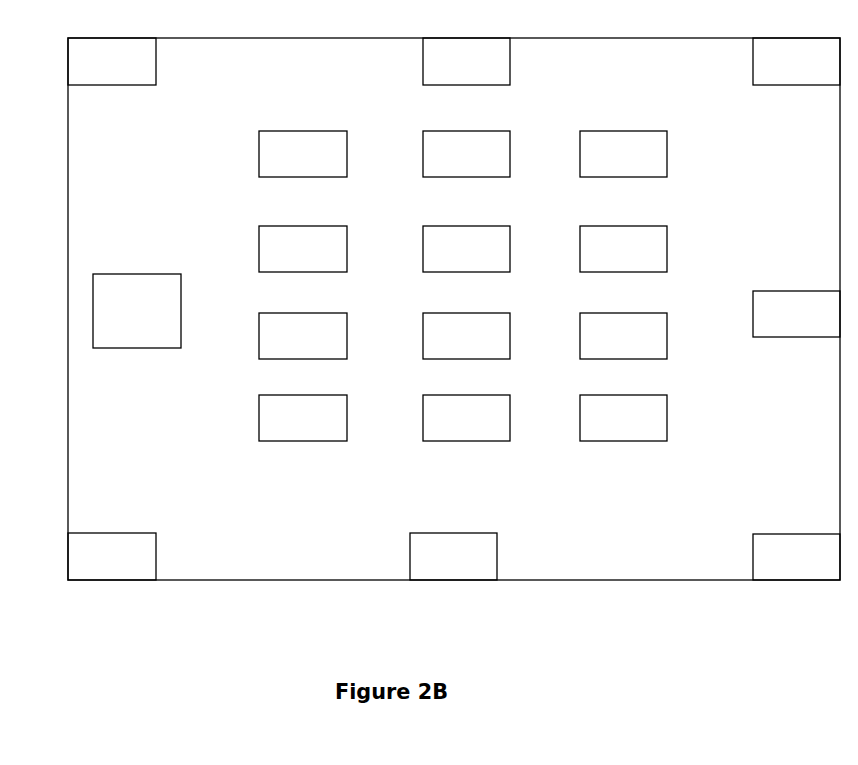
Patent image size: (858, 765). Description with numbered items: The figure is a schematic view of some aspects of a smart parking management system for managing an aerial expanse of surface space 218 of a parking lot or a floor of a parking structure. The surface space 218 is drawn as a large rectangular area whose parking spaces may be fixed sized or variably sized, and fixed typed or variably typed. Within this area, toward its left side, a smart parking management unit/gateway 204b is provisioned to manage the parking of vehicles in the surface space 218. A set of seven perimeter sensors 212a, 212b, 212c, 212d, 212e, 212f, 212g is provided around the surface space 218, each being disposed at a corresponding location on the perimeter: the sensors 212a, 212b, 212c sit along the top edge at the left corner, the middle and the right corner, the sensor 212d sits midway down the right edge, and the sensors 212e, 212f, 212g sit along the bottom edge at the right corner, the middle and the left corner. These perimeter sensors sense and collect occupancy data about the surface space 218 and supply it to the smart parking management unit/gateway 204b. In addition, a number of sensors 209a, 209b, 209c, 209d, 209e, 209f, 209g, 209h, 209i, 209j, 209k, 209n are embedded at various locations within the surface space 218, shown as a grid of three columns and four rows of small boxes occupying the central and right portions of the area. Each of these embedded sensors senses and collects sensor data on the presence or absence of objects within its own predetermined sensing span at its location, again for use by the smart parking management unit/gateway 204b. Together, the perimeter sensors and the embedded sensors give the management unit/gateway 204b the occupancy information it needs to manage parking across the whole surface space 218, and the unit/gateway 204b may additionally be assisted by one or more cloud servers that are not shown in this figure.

The aerial expanse of surface space 218 is at (175, 187).
The sensor 212a is at (112, 61).
The sensor 212b is at (466, 61).
The sensor 212c is at (796, 61).
The sensor 212d is at (796, 314).
The sensor 212e is at (796, 557).
The sensor 212f is at (453, 556).
The sensor 212g is at (112, 556).
The smart parking management unit/gateway 204b is at (155, 309).
The embedded sensor 209a is at (319, 165).
The embedded sensor 209b is at (319, 259).
The embedded sensor 209c is at (319, 347).
The embedded sensor 209d is at (319, 429).
The embedded sensor 209e is at (482, 165).
The embedded sensor 209f is at (480, 259).
The embedded sensor 209g is at (482, 347).
The embedded sensor 209h is at (482, 429).
The embedded sensor 209i is at (635, 165).
The embedded sensor 209j is at (635, 259).
The embedded sensor 209k is at (640, 347).
The embedded sensor 209n is at (640, 429).